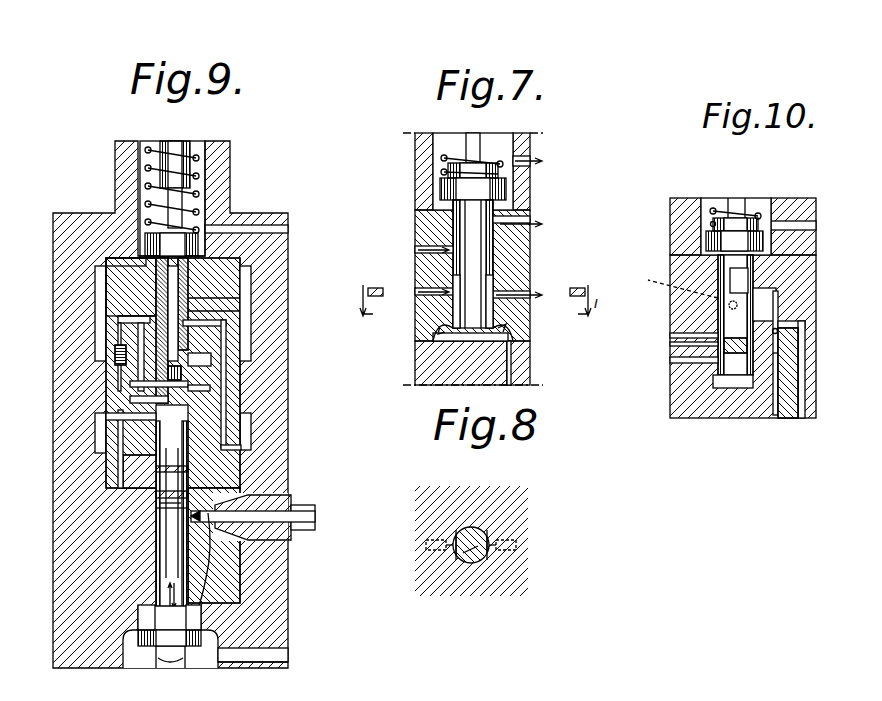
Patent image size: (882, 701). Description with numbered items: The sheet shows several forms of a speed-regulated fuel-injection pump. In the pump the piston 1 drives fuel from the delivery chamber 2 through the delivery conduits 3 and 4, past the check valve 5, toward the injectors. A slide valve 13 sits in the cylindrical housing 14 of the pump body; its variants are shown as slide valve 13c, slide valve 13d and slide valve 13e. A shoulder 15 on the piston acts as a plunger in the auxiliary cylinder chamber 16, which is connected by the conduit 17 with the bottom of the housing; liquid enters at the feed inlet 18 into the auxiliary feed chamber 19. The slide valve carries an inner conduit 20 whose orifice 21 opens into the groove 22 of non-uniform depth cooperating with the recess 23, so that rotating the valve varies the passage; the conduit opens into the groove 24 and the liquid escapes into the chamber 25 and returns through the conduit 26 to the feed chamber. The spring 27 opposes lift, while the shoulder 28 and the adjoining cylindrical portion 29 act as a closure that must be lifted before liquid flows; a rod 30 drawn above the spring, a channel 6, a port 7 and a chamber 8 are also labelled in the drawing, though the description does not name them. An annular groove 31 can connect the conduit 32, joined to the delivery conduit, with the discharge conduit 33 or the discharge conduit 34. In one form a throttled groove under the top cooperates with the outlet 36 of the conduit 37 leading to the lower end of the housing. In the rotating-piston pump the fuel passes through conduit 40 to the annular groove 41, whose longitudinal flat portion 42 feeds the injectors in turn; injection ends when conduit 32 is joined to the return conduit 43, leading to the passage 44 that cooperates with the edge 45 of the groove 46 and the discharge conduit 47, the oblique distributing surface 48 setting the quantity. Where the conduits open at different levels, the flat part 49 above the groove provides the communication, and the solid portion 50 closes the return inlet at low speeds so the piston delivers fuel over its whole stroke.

In FIG. 9, the piston 1 is at (240, 432).
In FIG. 9, the delivery chamber 2 is at (238, 410).
In FIG. 9, the conduit 3 is at (130, 322).
In FIG. 9, the conduit 4 is at (290, 500).
In FIG. 9, the check valve 5 is at (112, 345).
In FIG. 9, the channel 6 is at (100, 410).
In FIG. 9, the port 7 is at (243, 420).
In FIG. 9, the chamber 8 is at (171, 517).
In FIG. 8, the slide valve 13 is at (468, 553).
In FIG. 7, the slide-valve 13c is at (535, 225).
In FIG. 9, the slide-valve 13d is at (232, 303).
In FIG. 10, the slide-valve 13e is at (767, 300).
In FIG. 9, the cylindrical housing 14 is at (237, 320).
In FIG. 9, the shoulder 15 is at (193, 628).
In FIG. 9, the auxiliary cylinder chamber 16 is at (190, 605).
In FIG. 9, the conduit 17 is at (200, 533).
In FIG. 7, the conduit 17 is at (501, 355).
In FIG. 10, the conduit 17 is at (792, 395).
In FIG. 9, the feed inlet 18 is at (240, 646).
In FIG. 9, the auxiliary feed chamber 19 is at (250, 656).
In FIG. 9, the inner conduit 20 is at (165, 266).
In FIG. 9, the orifice 21 is at (173, 363).
In FIG. 9, the groove 22 is at (180, 376).
In FIG. 7, the groove 22 is at (448, 301).
In FIG. 8, the groove 22 is at (442, 549).
In FIG. 9, the recess 23 is at (200, 380).
In FIG. 7, the recess 23 is at (492, 326).
In FIG. 8, the recess 23 is at (483, 523).
In FIG. 9, the groove 24 is at (125, 254).
In FIG. 9, the chamber 25 is at (140, 213).
In FIG. 7, the chamber 25 is at (484, 140).
In FIG. 9, the conduit 26 is at (248, 222).
In FIG. 7, the conduit 26 is at (512, 150).
In FIG. 10, the conduit 26 is at (783, 218).
In FIG. 9, the spring 27 is at (192, 152).
In FIG. 9, the shoulder 28 is at (140, 250).
In FIG. 7, the shoulder 28 is at (490, 183).
In FIG. 10, the shoulder 28 is at (747, 205).
In FIG. 9, the cylindrical portion 29 is at (205, 252).
In FIG. 9, the push rod 30 is at (175, 135).
In FIG. 9, the annular groove 31 is at (130, 310).
In FIG. 7, the annular groove 31 is at (476, 238).
In FIG. 10, the annular groove 31 is at (700, 336).
In FIG. 9, the conduit 32 is at (35, 335).
In FIG. 7, the conduit 32 is at (420, 243).
In FIG. 10, the conduit 32 is at (680, 327).
In FIG. 9, the discharge conduit 33 is at (232, 290).
In FIG. 7, the discharge conduit 33 is at (505, 210).
In FIG. 10, the discharge conduit 33 is at (674, 284).
In FIG. 10, the discharge conduit 34 is at (680, 352).
In FIG. 10, the outlet 36 is at (757, 290).
In FIG. 10, the conduit 37 is at (768, 348).
In FIG. 9, the conduit 40 is at (115, 478).
In FIG. 9, the annular groove 41 is at (150, 500).
In FIG. 9, the longitudinal flat portion 42 is at (165, 522).
In FIG. 9, the return conduit 43 is at (190, 350).
In FIG. 10, the return conduit 43 is at (792, 330).
In FIG. 9, the passage 44 is at (180, 461).
In FIG. 9, the edge 45 is at (150, 486).
In FIG. 9, the groove 46 is at (152, 495).
In FIG. 9, the discharge conduit 47 is at (92, 430).
In FIG. 9, the oblique distributing surface 48 is at (112, 450).
In FIG. 10, the flat part 49 is at (718, 312).
In FIG. 10, the solid portion 50 is at (770, 320).